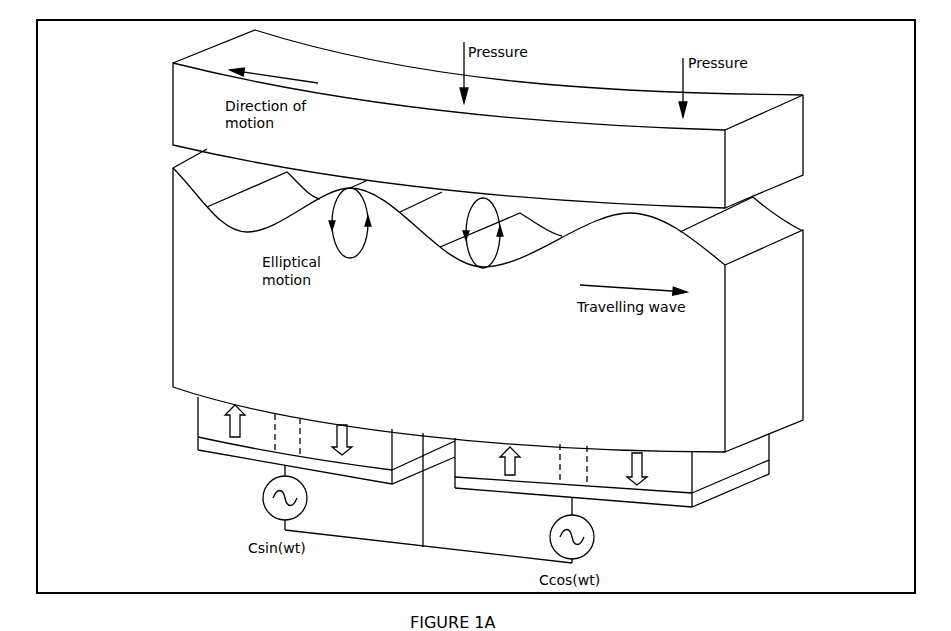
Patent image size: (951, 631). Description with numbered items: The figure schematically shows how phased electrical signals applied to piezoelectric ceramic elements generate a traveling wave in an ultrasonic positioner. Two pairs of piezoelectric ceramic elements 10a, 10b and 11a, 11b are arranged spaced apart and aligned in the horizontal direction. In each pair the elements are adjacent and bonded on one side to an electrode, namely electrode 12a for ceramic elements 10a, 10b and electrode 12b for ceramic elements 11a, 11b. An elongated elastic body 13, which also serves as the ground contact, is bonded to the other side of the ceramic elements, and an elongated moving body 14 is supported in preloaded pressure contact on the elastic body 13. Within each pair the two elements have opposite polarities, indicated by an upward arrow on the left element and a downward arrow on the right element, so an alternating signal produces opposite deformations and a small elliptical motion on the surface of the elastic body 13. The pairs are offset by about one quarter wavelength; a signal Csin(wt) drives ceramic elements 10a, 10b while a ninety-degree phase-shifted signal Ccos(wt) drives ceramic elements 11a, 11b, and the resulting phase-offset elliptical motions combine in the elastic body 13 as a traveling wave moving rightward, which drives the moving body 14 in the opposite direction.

The moving body 14 is at (782, 137).
The elastic body 13 is at (710, 363).
The piezoelectric ceramic element 10a is at (205, 417).
The piezoelectric ceramic element 10b is at (397, 452).
The electrode 12a is at (253, 465).
The piezoelectric ceramic element 11a is at (470, 460).
The piezoelectric ceramic element 11b is at (682, 484).
The electrode 12b is at (605, 505).